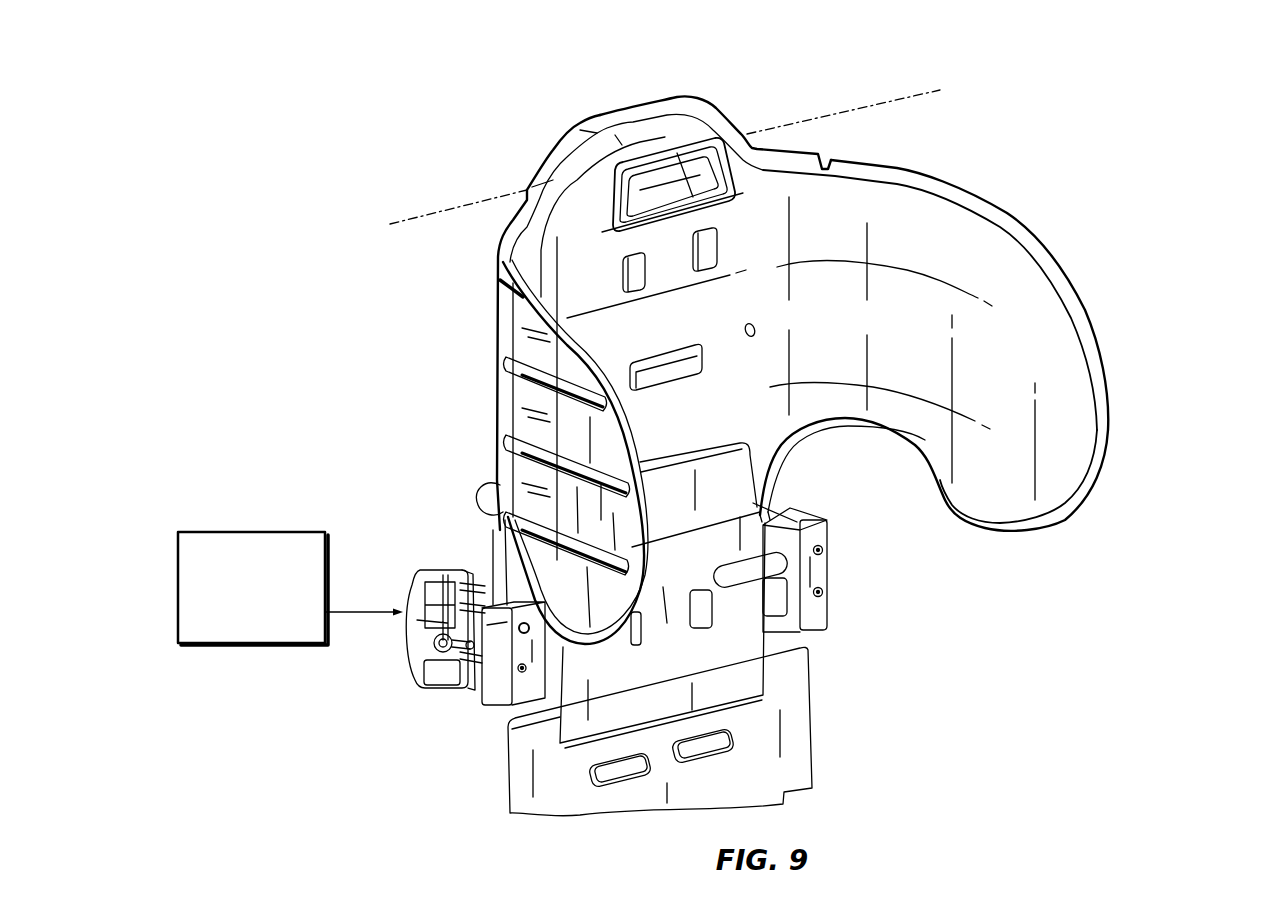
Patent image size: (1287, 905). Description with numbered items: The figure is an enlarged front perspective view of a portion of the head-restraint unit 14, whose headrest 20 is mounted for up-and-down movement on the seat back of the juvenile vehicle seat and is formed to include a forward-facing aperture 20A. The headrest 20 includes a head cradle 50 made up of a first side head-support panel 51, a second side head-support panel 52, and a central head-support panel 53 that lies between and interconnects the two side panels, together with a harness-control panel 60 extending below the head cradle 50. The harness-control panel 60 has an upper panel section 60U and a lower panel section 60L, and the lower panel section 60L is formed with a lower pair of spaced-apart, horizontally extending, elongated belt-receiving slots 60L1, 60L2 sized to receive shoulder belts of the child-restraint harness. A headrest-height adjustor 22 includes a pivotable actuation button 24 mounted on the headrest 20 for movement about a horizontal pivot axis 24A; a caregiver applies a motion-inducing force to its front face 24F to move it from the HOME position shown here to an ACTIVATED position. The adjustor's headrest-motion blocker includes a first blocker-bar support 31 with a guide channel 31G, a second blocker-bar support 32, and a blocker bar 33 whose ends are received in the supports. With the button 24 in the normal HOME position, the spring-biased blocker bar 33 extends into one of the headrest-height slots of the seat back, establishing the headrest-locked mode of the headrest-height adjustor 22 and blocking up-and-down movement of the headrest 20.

The head-restraint unit 14 is at (1003, 184).
The headrest 20 is at (1022, 671).
The forward-facing aperture 20A is at (712, 108).
The headrest-height adjustor 22 is at (224, 532).
The pivotable actuation button 24 is at (481, 73).
The horizontal pivot axis 24A is at (818, 116).
The front face 24F is at (698, 194).
The first blocker-bar support 31 is at (442, 556).
The guide channel 31G is at (410, 637).
The second blocker-bar support 32 is at (772, 492).
The blocker bar 33 is at (420, 680).
The head cradle 50 is at (1037, 229).
The first side head-support panel 51 is at (487, 383).
The second side head-support panel 52 is at (1010, 545).
The central head-support panel 53 is at (692, 312).
The harness-control panel 60 is at (936, 694).
The upper panel section 60U is at (836, 632).
The lower panel section 60L is at (828, 717).
The lower belt-receiving slot 60L1 is at (615, 772).
The lower belt-receiving slot 60L2 is at (690, 760).